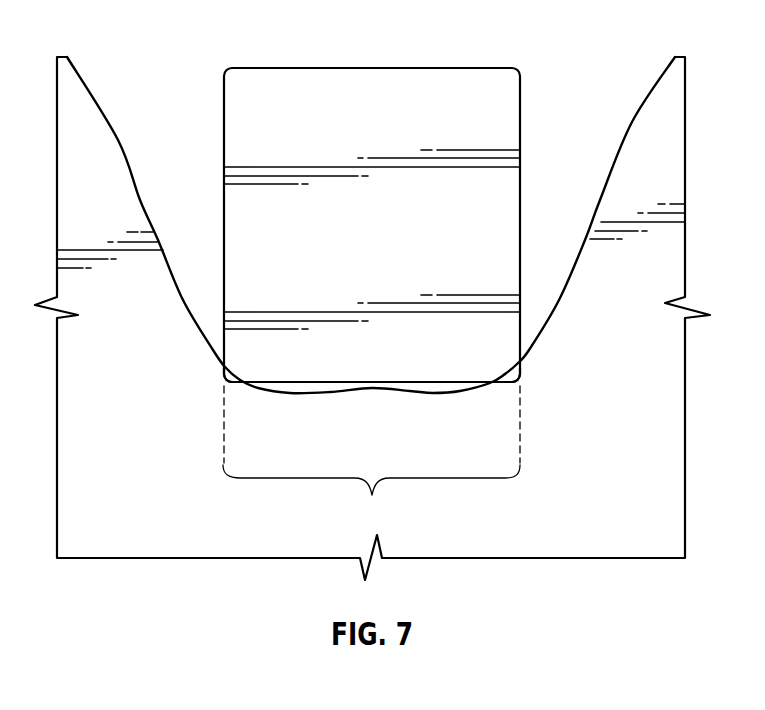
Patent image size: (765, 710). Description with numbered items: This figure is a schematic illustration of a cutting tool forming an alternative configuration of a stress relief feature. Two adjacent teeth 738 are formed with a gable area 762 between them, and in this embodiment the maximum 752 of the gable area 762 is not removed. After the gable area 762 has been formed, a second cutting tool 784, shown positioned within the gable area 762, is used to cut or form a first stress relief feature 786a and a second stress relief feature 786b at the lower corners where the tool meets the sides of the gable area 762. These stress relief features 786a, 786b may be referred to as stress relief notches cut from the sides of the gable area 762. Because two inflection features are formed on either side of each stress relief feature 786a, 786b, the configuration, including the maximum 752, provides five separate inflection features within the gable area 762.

The teeth 738 is at (117, 140).
The maximum 752 is at (371, 391).
The gable area 762 is at (371, 459).
The second cutting tool 784 is at (408, 87).
The first stress relief feature 786a is at (222, 375).
The second stress relief feature 786b is at (522, 375).